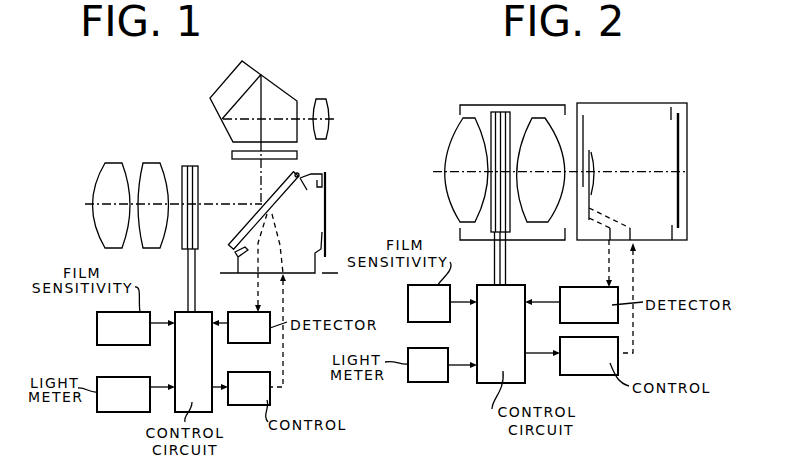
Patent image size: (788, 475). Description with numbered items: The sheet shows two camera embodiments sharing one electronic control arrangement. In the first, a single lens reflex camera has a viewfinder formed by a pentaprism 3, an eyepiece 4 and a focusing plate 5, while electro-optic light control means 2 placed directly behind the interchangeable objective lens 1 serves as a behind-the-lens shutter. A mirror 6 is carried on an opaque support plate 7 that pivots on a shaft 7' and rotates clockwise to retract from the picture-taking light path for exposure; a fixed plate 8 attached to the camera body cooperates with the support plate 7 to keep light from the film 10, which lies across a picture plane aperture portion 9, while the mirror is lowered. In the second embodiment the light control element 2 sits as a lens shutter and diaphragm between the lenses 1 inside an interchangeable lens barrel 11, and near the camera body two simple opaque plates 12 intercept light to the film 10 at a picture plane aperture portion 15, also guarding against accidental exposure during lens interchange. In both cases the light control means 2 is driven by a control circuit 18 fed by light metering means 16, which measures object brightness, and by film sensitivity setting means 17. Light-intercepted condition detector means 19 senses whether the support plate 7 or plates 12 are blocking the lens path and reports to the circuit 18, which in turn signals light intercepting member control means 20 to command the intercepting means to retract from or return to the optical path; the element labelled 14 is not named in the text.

In FIG. 1, the objective lens 1 is at (112, 158).
In FIG. 2, the objective lens 1 is at (453, 131).
In FIG. 1, the electro-optic light control means 2 is at (200, 158).
In FIG. 2, the electro-optic light control means 2 is at (512, 103).
In FIG. 1, the pentaprism 3 is at (279, 88).
In FIG. 1, the eyepiece 4 is at (321, 98).
In FIG. 1, the focusing plate 5 is at (230, 155).
In FIG. 1, the mirror 6 is at (243, 224).
In FIG. 1, the support plate 7 is at (278, 238).
In FIG. 1, the shaft 7' is at (321, 163).
In FIG. 1, the fixed plate 8 is at (302, 182).
In FIG. 1, the picture plane aperture portion 9 is at (327, 220).
In FIG. 1, the film 10 is at (327, 196).
In FIG. 2, the film 10 is at (675, 147).
In FIG. 2, the interchangeable lens barrel 11 is at (537, 103).
In FIG. 2, the plates 12 is at (609, 195).
In FIG. 2, the camera body 14 is at (637, 103).
In FIG. 2, the picture plane aperture portion 15 is at (670, 110).
In FIG. 1, the light metering means 16 is at (123, 394).
In FIG. 2, the light metering means 16 is at (428, 365).
In FIG. 1, the film sensitivity setting means 17 is at (123, 328).
In FIG. 2, the film sensitivity setting means 17 is at (429, 303).
In FIG. 1, the control circuit 18 is at (193, 362).
In FIG. 2, the control circuit 18 is at (501, 334).
In FIG. 1, the light-intercepted condition detector means 19 is at (249, 327).
In FIG. 2, the light-intercepted condition detector means 19 is at (589, 305).
In FIG. 1, the light intercepting member control means 20 is at (249, 388).
In FIG. 2, the light intercepting member control means 20 is at (589, 356).